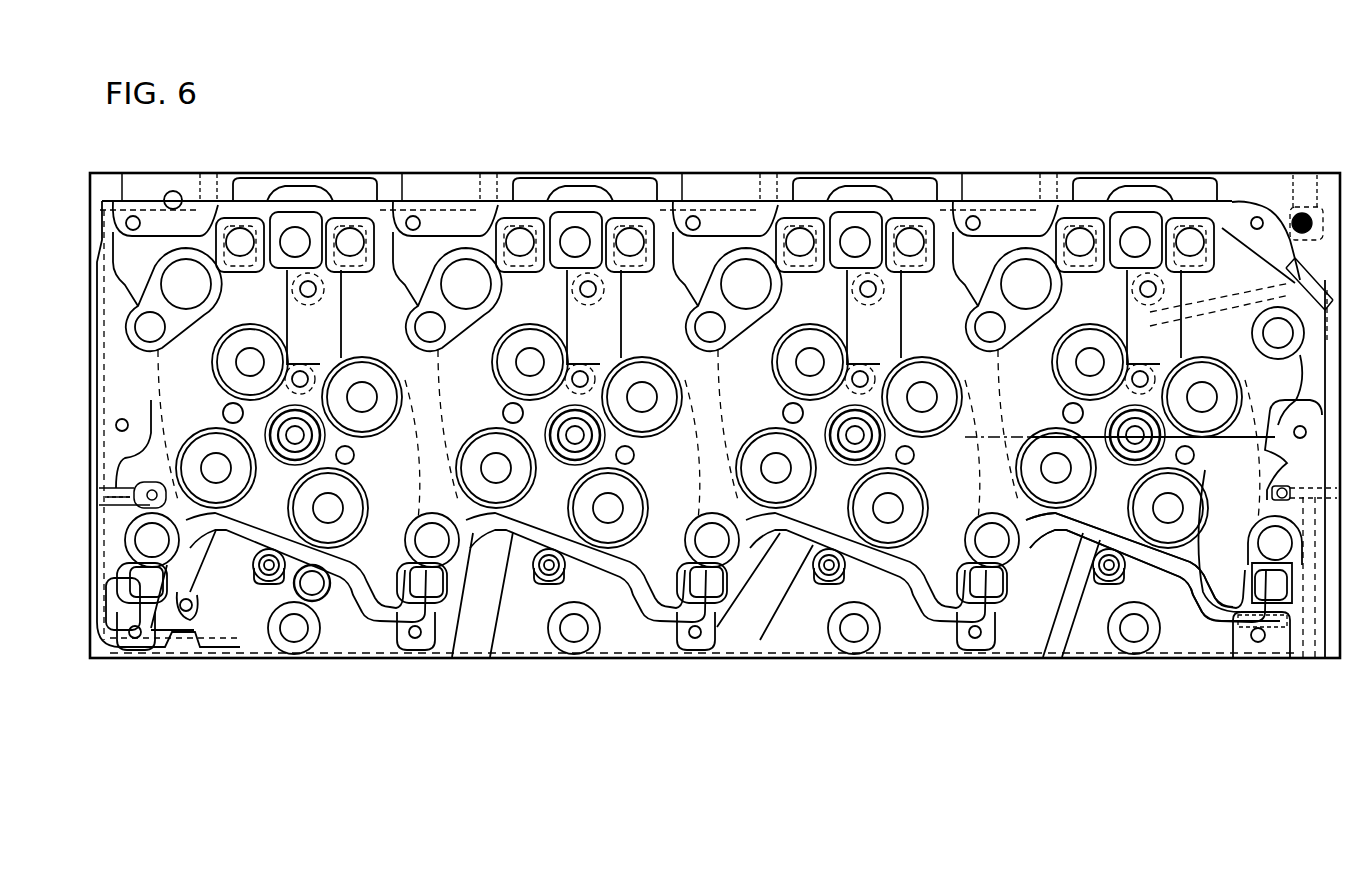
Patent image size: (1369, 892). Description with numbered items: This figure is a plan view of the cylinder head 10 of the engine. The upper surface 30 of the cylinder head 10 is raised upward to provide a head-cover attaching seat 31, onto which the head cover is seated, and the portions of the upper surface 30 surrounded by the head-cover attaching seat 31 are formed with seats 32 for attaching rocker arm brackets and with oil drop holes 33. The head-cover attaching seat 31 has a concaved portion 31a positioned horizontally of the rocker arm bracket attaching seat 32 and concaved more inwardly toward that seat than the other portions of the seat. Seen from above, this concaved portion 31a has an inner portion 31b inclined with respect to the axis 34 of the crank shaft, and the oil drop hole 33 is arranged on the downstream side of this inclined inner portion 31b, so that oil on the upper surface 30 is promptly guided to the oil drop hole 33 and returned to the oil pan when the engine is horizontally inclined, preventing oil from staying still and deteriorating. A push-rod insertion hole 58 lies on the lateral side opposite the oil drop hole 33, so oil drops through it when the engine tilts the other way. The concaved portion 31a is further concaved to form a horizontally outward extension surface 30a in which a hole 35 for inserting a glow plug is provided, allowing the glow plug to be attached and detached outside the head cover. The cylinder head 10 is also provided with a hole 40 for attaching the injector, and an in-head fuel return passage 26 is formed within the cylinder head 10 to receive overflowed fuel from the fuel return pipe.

The cylinder head 10 is at (1270, 172).
The in-head fuel return passage 26 is at (1320, 645).
The upper surface 30 is at (1225, 255).
The horizontally outward extension surface 30a is at (497, 640).
The head-cover attaching seat 31 is at (1233, 657).
The concaved portion 31a is at (620, 580).
The inner portion 31b is at (223, 530).
The rocker arm bracket attaching seat 32 is at (592, 335).
The oil drop hole 33 is at (410, 600).
The axis of the crank shaft 34 is at (1108, 465).
The glow plug insertion hole 35 is at (535, 575).
The injector attaching hole 40 is at (560, 428).
The push-rod insertion hole 58 is at (912, 236).